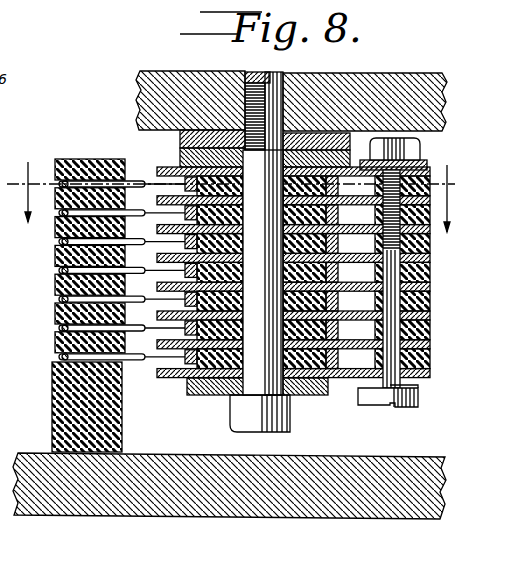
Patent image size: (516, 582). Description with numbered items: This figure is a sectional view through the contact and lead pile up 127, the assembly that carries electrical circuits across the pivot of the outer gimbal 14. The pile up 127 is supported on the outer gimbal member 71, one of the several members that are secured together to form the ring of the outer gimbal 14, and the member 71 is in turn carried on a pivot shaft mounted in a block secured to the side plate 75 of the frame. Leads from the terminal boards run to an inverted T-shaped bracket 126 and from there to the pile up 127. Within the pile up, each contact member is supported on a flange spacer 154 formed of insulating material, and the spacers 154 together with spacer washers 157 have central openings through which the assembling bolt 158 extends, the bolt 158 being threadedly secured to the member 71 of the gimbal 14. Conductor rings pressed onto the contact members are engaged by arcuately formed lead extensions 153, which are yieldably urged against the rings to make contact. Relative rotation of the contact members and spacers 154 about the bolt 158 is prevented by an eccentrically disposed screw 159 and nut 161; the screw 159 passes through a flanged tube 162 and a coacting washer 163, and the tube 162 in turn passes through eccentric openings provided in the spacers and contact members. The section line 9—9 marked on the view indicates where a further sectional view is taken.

The line 9— 9 is at (231, 189).
The outer gimbal 14 is at (362, 71).
The outer gimbal member 71 is at (178, 70).
The side plate 75 is at (203, 505).
The inverted T-shaped bracket 126 is at (55, 372).
The contact and lead pile up 127 is at (207, 396).
The lead extensions 153 is at (150, 242).
The flange spacer 154 is at (150, 335).
The spacer washers 157 is at (177, 157).
The assembling bolt 158 is at (256, 70).
The eccentrically disposed screw 159 is at (381, 404).
The nut 161 is at (396, 140).
The flanged tube 162 is at (411, 275).
The washer 163 is at (421, 163).